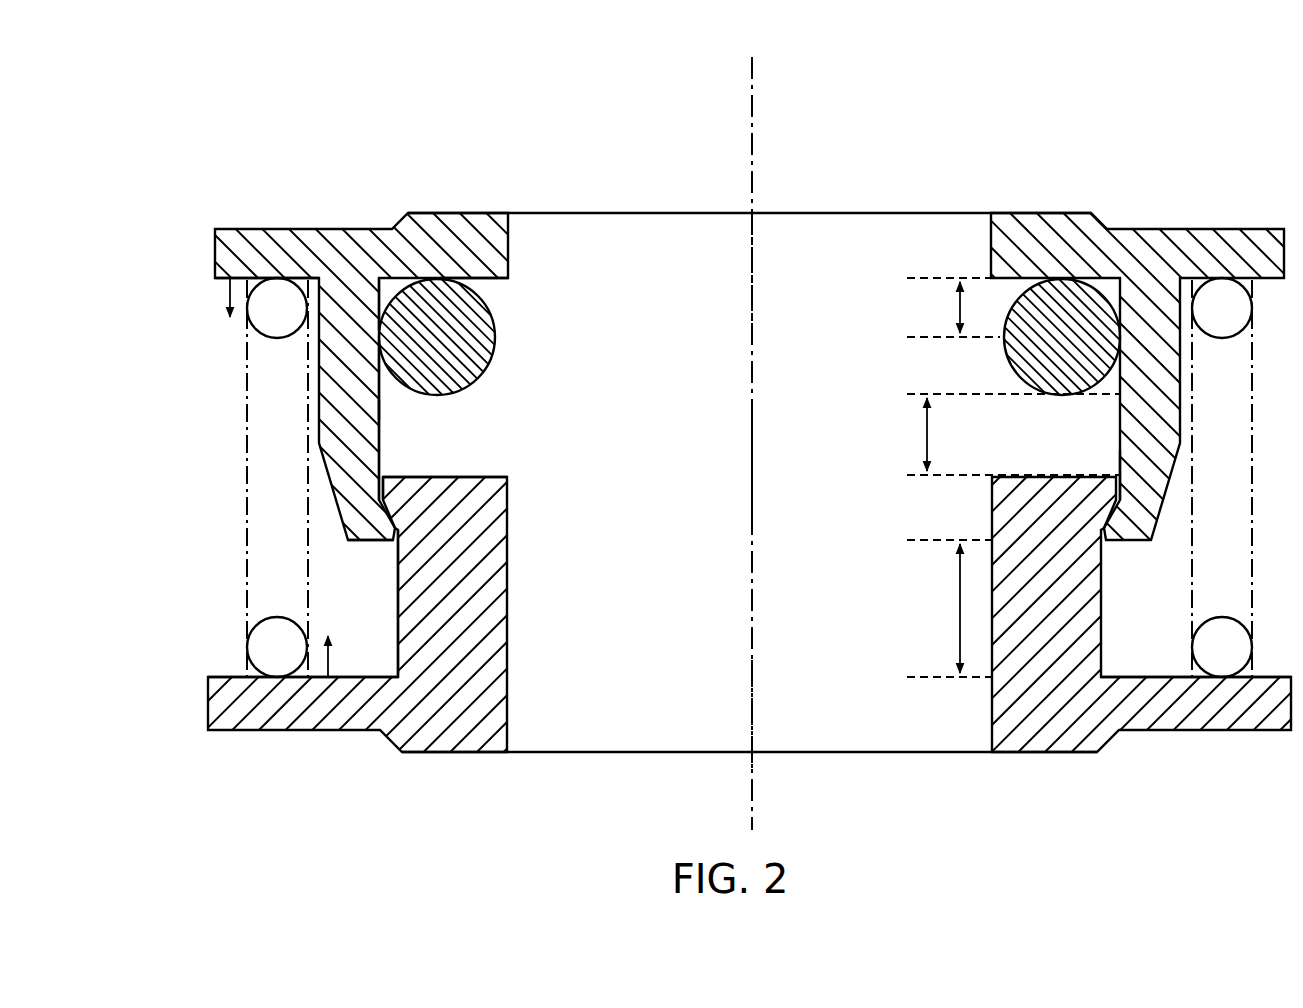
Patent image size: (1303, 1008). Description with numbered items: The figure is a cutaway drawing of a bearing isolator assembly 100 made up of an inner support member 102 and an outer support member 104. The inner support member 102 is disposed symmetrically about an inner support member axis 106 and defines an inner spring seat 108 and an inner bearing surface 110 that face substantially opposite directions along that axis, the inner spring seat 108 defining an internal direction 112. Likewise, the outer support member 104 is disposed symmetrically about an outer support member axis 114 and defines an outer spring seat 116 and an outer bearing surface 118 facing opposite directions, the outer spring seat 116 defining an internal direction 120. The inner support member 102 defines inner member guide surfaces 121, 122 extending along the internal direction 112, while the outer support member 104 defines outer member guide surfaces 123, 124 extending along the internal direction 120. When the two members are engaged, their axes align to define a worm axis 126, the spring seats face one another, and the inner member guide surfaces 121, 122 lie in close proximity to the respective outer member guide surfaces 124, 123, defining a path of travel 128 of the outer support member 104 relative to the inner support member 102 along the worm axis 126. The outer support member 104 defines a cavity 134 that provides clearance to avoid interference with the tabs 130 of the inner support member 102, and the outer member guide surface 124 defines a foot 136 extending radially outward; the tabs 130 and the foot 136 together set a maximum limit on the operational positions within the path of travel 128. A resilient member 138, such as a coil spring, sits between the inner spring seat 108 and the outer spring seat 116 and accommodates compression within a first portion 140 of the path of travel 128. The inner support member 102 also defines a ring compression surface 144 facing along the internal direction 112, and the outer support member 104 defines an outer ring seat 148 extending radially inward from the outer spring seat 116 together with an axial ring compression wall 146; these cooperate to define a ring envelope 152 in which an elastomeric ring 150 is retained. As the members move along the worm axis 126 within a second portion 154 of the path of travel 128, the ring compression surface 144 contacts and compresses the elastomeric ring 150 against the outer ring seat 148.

The bearing isolator assembly 100 is at (440, 116).
The inner support member 102 is at (434, 752).
The outer support member 104 is at (422, 224).
The inner support member axis 106 is at (755, 727).
The inner spring seat 108 is at (222, 677).
The inner bearing surface 110 is at (487, 756).
The internal direction 112 is at (329, 662).
The outer support member axis 114 is at (755, 280).
The outer spring seat 116 is at (227, 279).
The outer bearing surface 118 is at (488, 212).
The internal direction 120 is at (230, 303).
The inner member guide surface 121 is at (373, 489).
The inner member guide surface 122 is at (396, 601).
The outer member guide surface 123 is at (403, 528).
The outer member guide surface 124 is at (382, 412).
The worm axis 126 is at (755, 483).
The path of travel 128 is at (958, 613).
The tabs 130 is at (390, 475).
The cavity 134 is at (1117, 473).
The foot flange 136 is at (383, 531).
The resilient member 138 is at (270, 615).
The first portion of the path of travel 140 is at (925, 430).
The ring compression surface 144 is at (506, 476).
The axial ring compression wall 146 is at (386, 373).
The outer ring seat 148 is at (496, 288).
The elastomeric ring 150 is at (405, 290).
The ring envelope 152 is at (517, 349).
The second portion of the path of travel 154 is at (958, 306).